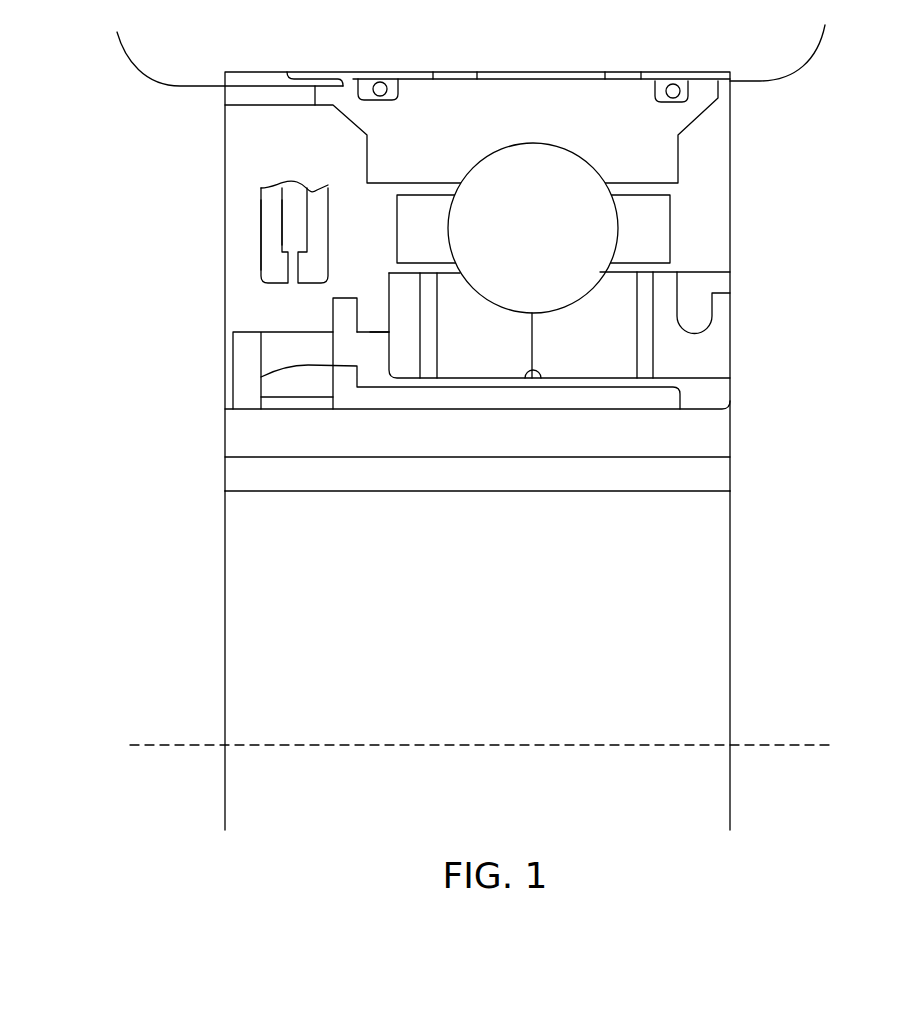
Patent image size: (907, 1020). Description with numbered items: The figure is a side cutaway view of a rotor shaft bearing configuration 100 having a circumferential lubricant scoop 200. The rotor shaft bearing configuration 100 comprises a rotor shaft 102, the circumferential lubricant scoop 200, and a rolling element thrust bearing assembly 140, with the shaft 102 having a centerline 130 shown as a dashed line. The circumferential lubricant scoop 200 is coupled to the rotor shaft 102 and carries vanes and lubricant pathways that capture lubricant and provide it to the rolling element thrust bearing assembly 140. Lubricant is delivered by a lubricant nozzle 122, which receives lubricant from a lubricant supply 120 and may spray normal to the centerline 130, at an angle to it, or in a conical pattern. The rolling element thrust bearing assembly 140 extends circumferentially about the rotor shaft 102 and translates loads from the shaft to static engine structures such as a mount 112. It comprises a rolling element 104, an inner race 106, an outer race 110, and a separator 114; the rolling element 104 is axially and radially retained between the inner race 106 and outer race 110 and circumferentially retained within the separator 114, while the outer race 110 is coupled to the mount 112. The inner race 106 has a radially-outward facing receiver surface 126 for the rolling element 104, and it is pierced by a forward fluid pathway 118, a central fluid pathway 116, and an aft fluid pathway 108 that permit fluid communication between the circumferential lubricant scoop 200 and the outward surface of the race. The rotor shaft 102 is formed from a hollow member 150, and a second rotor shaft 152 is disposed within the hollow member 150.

The rotor shaft bearing configuration 100 is at (172, 105).
The rotor shaft 102 is at (478, 640).
The rolling element 104 is at (520, 240).
The inner race 106 is at (622, 352).
The aft fluid pathway 108 is at (643, 297).
The outer race 110 is at (653, 147).
The mount 112 is at (462, 52).
The separator 114 is at (418, 233).
The central fluid pathway 116 is at (538, 345).
The forward fluid pathway 118 is at (417, 363).
The lubricant supply 120 is at (297, 182).
The lubricant nozzle 122 is at (280, 227).
The receiver surface 126 is at (505, 312).
The centerline 130 is at (501, 744).
The rolling element thrust bearing assembly 140 is at (757, 112).
The hollow member 150 is at (245, 445).
The second rotor shaft 152 is at (245, 483).
The circumferential lubricant scoop 200 is at (735, 383).